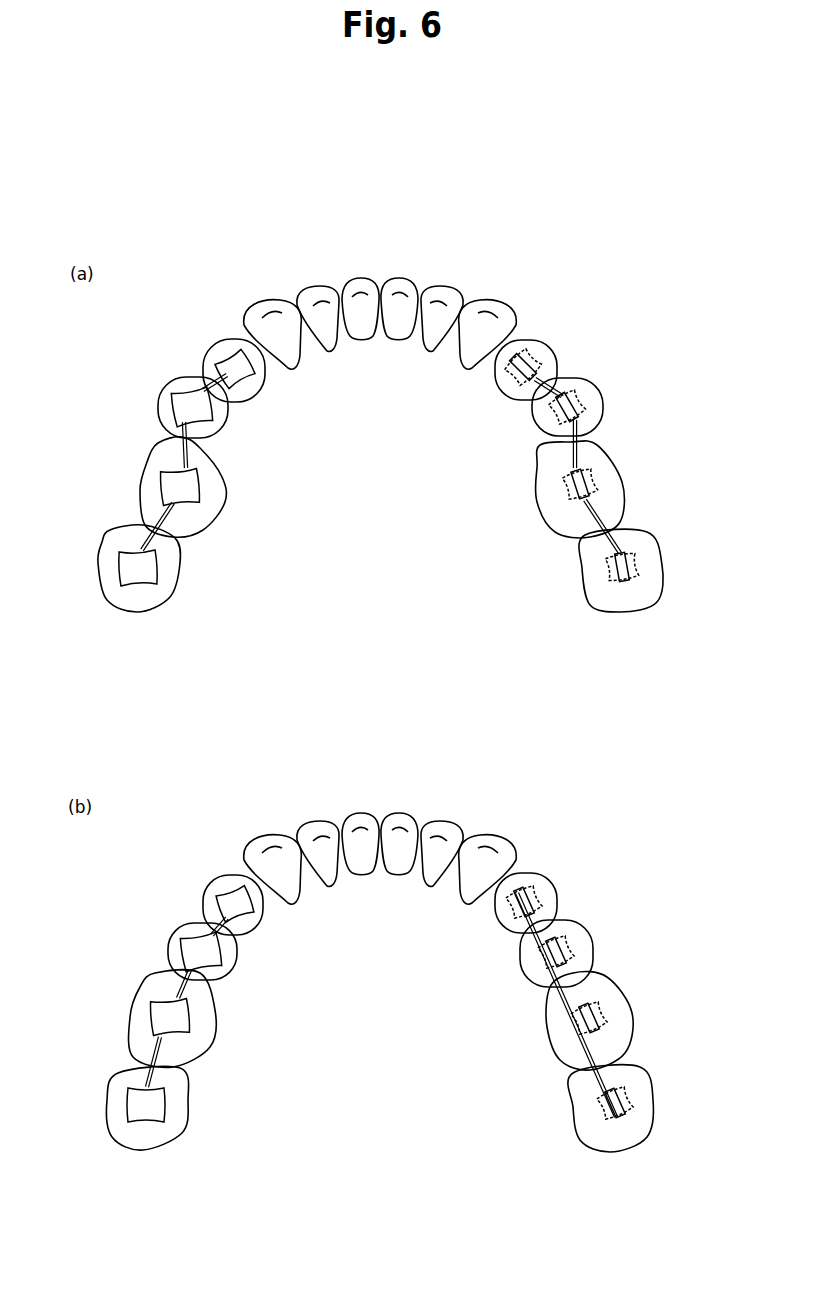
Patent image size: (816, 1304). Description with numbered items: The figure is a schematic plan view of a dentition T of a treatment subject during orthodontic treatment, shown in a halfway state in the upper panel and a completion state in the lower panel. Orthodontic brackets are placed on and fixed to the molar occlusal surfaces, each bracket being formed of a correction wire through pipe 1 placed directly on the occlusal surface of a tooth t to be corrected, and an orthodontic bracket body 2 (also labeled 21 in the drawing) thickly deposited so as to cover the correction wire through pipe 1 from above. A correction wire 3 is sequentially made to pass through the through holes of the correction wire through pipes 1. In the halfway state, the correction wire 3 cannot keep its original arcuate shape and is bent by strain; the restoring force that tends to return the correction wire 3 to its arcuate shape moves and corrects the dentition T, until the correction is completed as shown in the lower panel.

The dentition T is at (388, 240).
The tooth t is at (150, 470).
The correction wire through pipe 1 is at (498, 383).
The orthodontic bracket body 2 is at (228, 366).
The bracket body 21 is at (378, 734).
The correction wire 3 is at (208, 386).